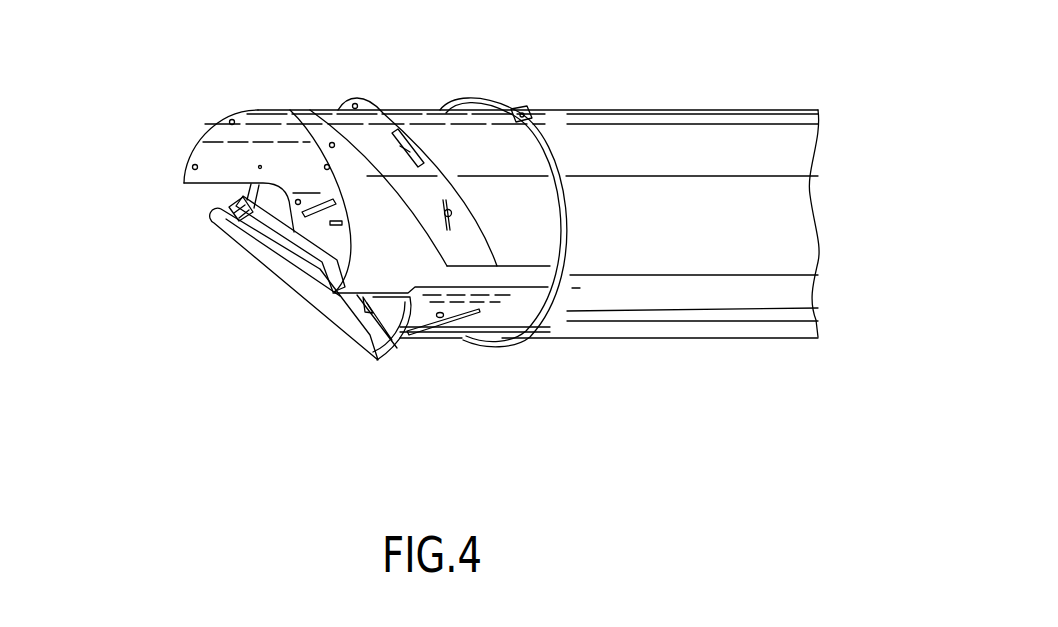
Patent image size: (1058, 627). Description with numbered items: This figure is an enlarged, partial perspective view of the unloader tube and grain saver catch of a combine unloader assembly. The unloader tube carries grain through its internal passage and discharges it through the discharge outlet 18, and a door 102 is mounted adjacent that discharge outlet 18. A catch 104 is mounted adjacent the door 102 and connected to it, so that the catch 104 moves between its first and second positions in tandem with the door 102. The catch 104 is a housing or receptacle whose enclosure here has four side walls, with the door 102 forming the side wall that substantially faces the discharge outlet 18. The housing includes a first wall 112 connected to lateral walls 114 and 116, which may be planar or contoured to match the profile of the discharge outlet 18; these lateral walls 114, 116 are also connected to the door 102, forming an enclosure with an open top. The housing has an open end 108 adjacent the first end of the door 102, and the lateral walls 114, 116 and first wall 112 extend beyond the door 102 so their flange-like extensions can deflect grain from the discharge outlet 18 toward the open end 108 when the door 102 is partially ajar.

The discharge outlet 18 is at (314, 225).
The door 102 is at (405, 332).
The catch 104 is at (341, 338).
The open end 108 is at (253, 228).
The first wall 112 is at (273, 263).
The lateral wall 114 is at (226, 205).
The lateral wall 116 is at (387, 340).